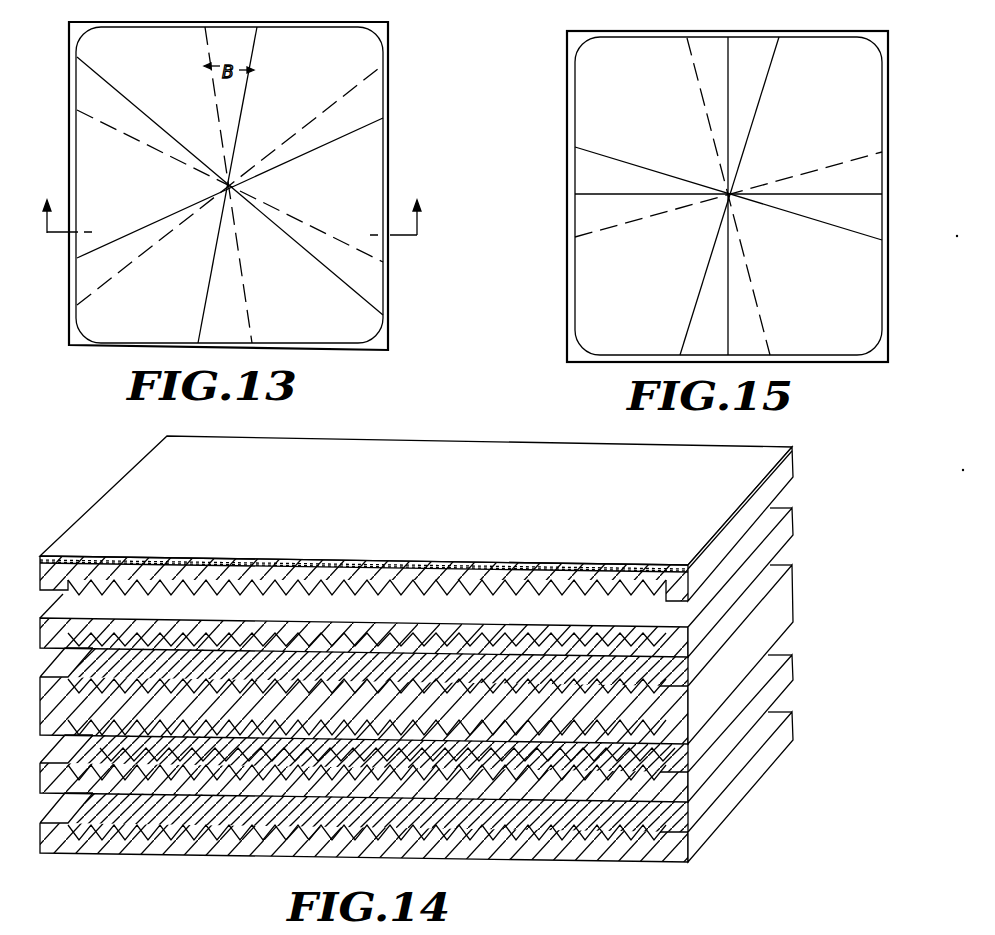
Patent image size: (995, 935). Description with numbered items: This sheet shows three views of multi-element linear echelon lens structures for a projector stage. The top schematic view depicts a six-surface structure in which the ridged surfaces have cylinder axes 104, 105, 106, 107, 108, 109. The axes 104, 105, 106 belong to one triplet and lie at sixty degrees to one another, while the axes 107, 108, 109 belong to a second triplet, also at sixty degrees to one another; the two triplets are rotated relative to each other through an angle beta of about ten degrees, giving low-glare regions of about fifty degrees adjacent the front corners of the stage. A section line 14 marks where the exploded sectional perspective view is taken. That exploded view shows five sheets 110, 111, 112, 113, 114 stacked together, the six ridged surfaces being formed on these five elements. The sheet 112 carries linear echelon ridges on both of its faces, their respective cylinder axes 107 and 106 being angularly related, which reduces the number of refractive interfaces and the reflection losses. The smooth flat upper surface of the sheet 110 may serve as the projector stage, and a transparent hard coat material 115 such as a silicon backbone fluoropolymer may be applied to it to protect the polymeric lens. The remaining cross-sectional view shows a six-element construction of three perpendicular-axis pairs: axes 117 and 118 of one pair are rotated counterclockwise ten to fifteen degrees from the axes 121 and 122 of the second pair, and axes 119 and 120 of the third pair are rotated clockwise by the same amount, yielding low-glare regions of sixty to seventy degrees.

In FIG. 13, the cylinder axis 104 is at (208, 46).
In FIG. 13, the cylinder axis 105 is at (357, 84).
In FIG. 13, the cylinder axis 106 is at (348, 246).
In FIG. 14, the cylinder axis 106 is at (612, 738).
In FIG. 13, the cylinder axis 107 is at (257, 43).
In FIG. 14, the cylinder axis 107 is at (645, 677).
In FIG. 13, the cylinder axis 108 is at (347, 134).
In FIG. 13, the cylinder axis 109 is at (333, 272).
In FIG. 13, the section line 14 is at (232, 241).
In FIG. 14, the sheet 110 is at (792, 474).
In FIG. 14, the sheet 111 is at (787, 525).
In FIG. 14, the sheet 112 is at (785, 588).
In FIG. 14, the sheet 113 is at (785, 668).
In FIG. 14, the sheet 114 is at (785, 730).
In FIG. 14, the hard coat material 115 is at (770, 453).
In FIG. 15, the cylinder axis 117 is at (693, 62).
In FIG. 15, the cylinder axis 118 is at (838, 164).
In FIG. 15, the cylinder axis 119 is at (774, 54).
In FIG. 15, the cylinder axis 120 is at (850, 231).
In FIG. 15, the cylinder axis 121 is at (728, 58).
In FIG. 15, the cylinder axis 122 is at (870, 197).